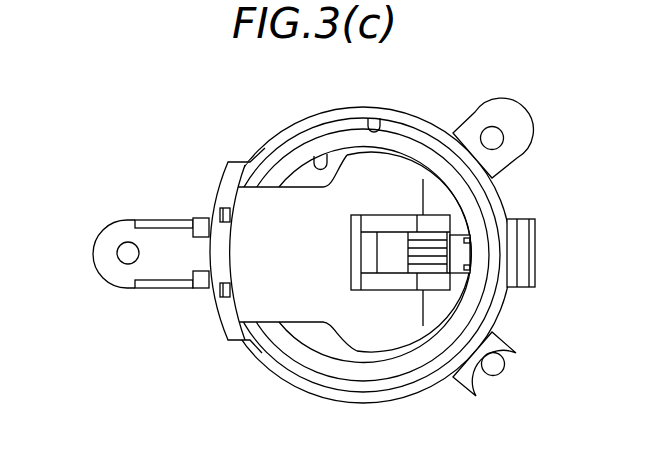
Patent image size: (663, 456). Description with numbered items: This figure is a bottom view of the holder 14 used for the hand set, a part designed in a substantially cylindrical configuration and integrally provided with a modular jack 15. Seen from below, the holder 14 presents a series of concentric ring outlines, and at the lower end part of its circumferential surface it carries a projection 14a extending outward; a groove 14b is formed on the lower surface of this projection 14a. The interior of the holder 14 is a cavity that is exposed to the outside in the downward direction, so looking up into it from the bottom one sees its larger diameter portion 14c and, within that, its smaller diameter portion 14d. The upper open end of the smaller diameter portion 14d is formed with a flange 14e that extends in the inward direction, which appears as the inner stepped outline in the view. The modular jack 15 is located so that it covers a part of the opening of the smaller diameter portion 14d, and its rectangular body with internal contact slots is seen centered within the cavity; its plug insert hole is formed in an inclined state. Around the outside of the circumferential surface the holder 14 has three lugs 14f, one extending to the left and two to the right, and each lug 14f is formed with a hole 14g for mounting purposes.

The holder 14 is at (257, 110).
The projection 14a is at (215, 208).
The groove 14b is at (218, 210).
The larger diameter portion 14c is at (382, 126).
The smaller diameter portion 14d is at (321, 155).
The flange 14e is at (325, 177).
The lugs 14f is at (481, 114).
The hole 14g is at (497, 136).
The modular jack 15 is at (340, 257).